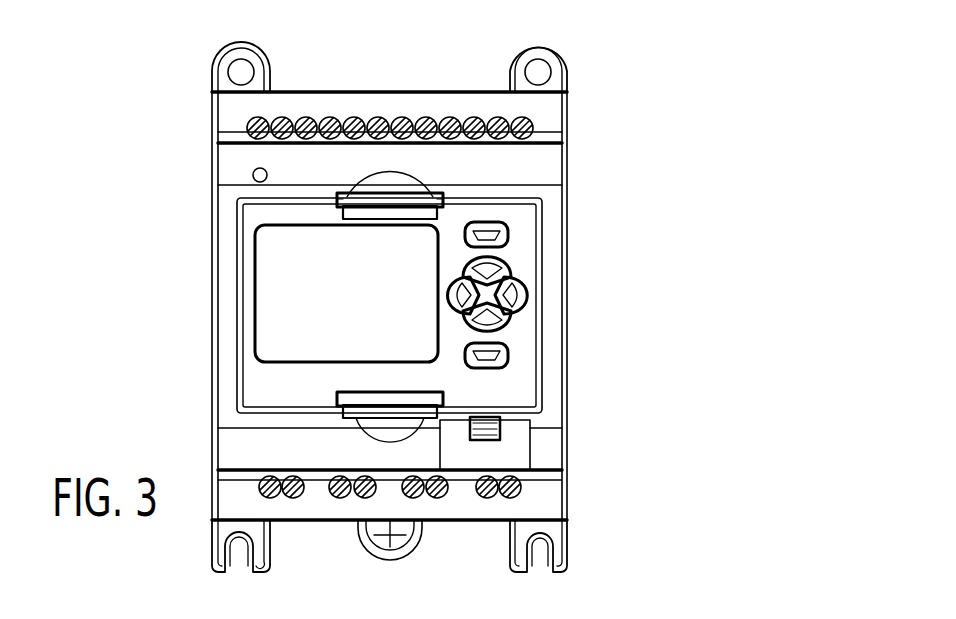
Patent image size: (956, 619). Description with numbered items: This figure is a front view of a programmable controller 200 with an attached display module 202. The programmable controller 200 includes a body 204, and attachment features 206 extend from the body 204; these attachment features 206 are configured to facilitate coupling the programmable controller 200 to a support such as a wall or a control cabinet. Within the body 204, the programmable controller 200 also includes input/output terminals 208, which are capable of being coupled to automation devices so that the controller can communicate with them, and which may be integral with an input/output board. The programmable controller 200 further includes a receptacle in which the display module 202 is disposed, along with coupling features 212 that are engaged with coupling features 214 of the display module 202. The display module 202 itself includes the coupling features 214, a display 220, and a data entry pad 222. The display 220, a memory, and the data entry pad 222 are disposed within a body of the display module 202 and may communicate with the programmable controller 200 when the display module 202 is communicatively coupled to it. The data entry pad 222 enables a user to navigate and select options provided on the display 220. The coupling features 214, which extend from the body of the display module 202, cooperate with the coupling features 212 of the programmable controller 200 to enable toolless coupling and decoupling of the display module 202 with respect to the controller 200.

The programmable controller 200 is at (186, 318).
The display module 202 is at (540, 222).
The body 204 is at (560, 395).
The attachment features 206 is at (227, 53).
The input/output terminals 208 is at (537, 137).
The coupling features 212 is at (422, 188).
The coupling features 214 is at (353, 200).
The display 220 is at (268, 247).
The data entry pad 222 is at (515, 313).